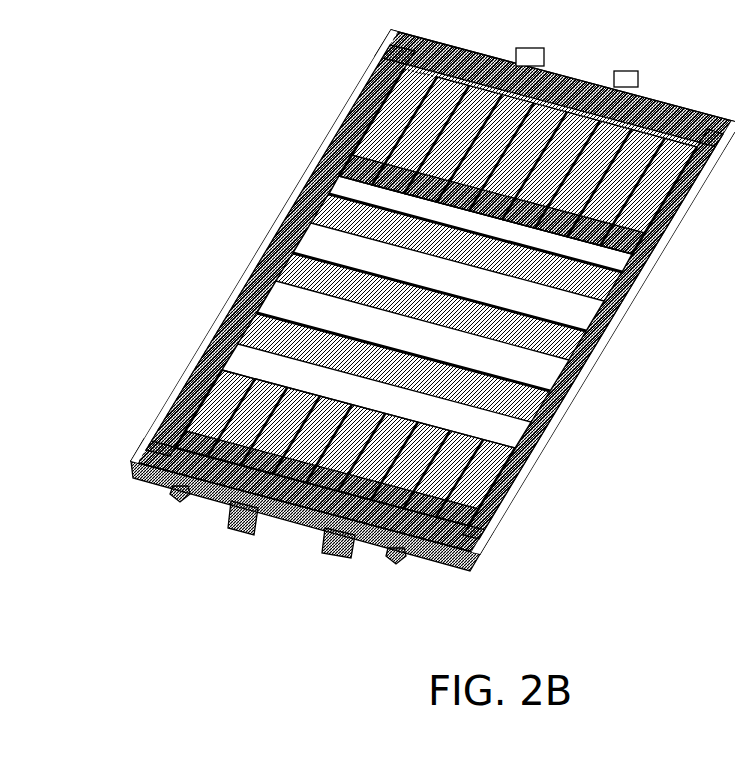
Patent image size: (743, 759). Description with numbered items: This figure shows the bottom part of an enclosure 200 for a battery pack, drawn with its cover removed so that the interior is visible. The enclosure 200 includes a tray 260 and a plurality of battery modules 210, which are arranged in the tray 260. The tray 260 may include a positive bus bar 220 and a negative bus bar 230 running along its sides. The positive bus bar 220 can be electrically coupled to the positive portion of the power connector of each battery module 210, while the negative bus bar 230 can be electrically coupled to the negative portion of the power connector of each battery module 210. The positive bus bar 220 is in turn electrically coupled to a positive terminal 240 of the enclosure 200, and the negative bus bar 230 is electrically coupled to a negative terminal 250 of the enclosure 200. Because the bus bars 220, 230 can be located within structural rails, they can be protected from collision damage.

The enclosure 200 is at (164, 59).
The battery module 210 is at (352, 67).
The positive bus bar 220 is at (262, 286).
The negative bus bar 230 is at (598, 320).
The positive terminal 240 is at (172, 492).
The negative terminal 250 is at (388, 553).
The tray 260 is at (304, 133).